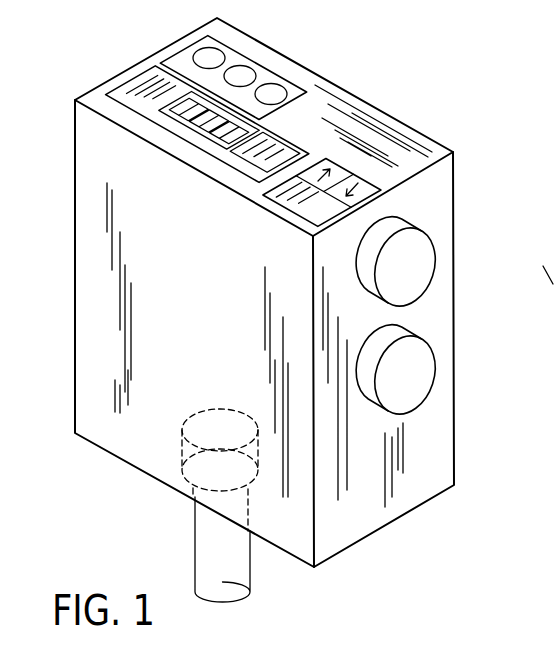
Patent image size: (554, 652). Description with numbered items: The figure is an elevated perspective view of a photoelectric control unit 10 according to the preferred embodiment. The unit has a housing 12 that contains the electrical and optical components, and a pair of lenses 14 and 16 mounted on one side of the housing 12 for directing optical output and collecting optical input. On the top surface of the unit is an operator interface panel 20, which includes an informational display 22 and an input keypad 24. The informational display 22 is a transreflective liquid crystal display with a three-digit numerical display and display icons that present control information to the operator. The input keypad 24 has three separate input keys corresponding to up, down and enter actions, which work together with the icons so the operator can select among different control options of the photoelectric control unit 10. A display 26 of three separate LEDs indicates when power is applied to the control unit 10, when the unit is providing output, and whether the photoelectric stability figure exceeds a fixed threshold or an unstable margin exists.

The photoelectric control unit 10 is at (423, 514).
The housing 12 is at (73, 348).
The lens 14 is at (435, 250).
The lens 16 is at (435, 357).
The operator interface panel 20 is at (107, 75).
The informational display 22 is at (181, 139).
The input keypad 24 is at (266, 199).
The display 26 is at (185, 52).